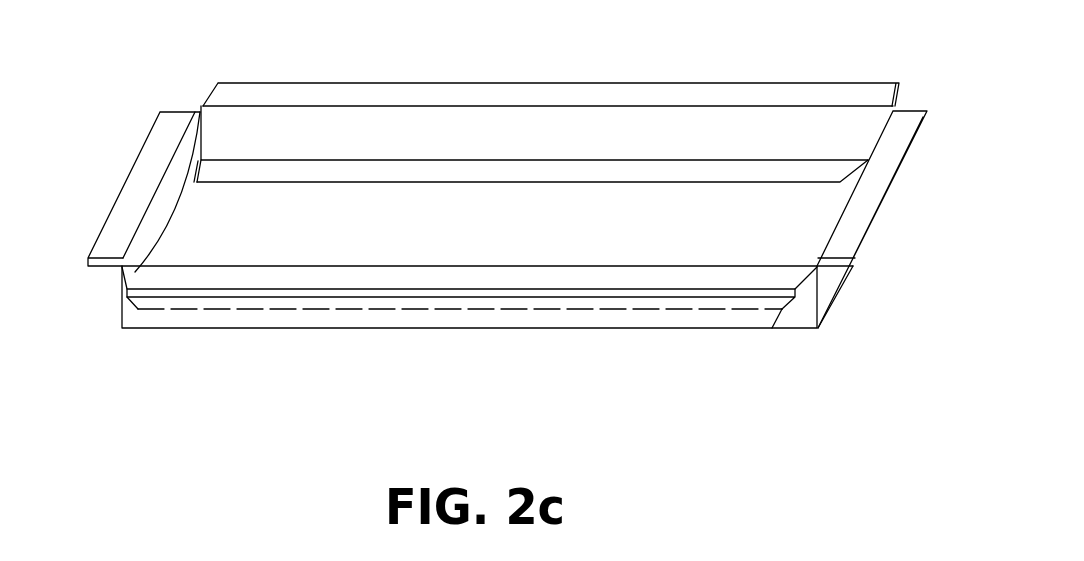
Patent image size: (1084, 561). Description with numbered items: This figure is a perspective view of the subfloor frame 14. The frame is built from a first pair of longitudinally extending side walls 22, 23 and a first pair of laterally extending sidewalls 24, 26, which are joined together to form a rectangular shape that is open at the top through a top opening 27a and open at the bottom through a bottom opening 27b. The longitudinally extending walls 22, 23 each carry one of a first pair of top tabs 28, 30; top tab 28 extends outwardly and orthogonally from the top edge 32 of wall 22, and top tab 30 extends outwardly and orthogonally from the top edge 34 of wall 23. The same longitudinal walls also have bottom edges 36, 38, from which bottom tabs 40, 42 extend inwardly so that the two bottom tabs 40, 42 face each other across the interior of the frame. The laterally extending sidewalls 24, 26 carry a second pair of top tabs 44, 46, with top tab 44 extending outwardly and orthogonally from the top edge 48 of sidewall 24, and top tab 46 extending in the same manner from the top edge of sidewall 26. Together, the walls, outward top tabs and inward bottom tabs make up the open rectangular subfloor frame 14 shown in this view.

The subfloor frame 14 is at (395, 391).
The longitudinally extending side wall 22 is at (128, 305).
The longitudinally extending side wall 23 is at (367, 130).
The laterally extending sidewall 24 is at (172, 190).
The laterally extending sidewall 26 is at (825, 282).
The top opening 27a is at (823, 139).
The bottom opening 27b is at (210, 247).
The top tab 28 is at (478, 97).
The top tab 30 is at (312, 277).
The top edge 32 is at (610, 96).
The top edge 34 is at (233, 267).
The bottom edge 36 is at (198, 172).
The bottom edge 38 is at (755, 330).
The bottom tab 40 is at (307, 173).
The bottom tab 42 is at (563, 318).
The top tab 44 is at (140, 180).
The top tab 46 is at (900, 128).
The top edge 48 is at (180, 165).